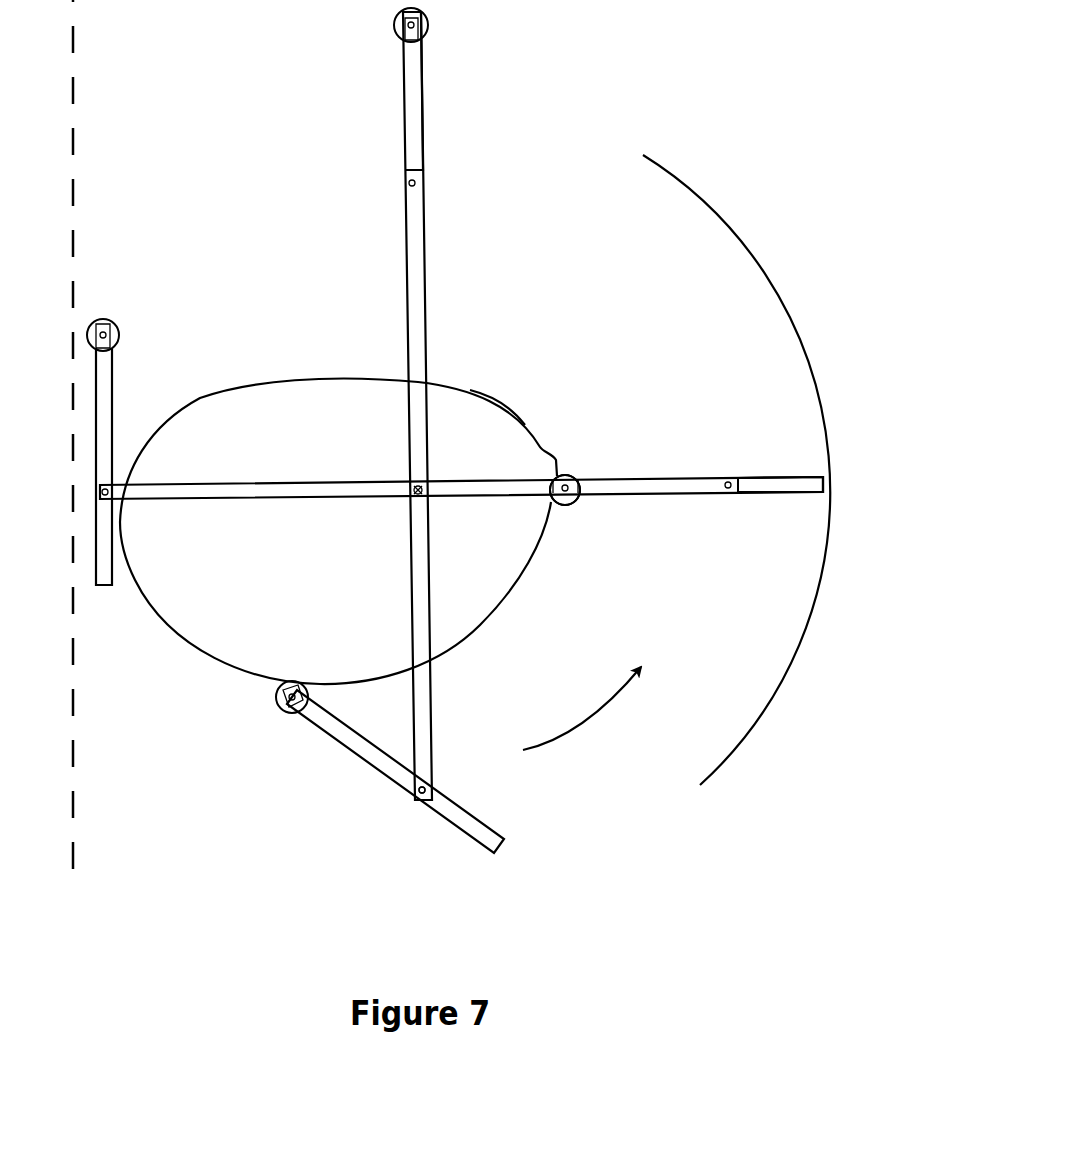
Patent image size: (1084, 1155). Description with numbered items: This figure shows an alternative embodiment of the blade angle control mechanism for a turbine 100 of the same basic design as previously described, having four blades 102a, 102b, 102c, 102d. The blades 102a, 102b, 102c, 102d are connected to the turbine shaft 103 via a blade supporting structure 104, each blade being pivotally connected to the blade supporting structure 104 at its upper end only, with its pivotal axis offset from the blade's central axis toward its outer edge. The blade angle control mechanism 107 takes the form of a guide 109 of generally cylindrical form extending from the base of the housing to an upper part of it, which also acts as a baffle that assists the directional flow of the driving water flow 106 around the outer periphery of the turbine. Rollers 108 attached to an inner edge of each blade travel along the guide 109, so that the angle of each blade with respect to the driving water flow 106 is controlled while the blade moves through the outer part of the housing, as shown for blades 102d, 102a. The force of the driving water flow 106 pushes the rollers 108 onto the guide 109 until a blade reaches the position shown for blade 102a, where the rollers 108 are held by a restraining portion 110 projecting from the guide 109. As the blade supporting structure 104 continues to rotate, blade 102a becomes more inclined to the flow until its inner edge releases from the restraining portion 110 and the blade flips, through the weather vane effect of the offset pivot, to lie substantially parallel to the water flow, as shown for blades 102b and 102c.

The turbine 100 is at (752, 126).
The blade 102a is at (775, 483).
The blade 102b is at (413, 80).
The blade 102c is at (110, 592).
The blade 102d is at (470, 828).
The turbine shaft 103 is at (412, 487).
The blade supporting structure 104 is at (415, 320).
The driving water flow 106 is at (583, 722).
The blade angle control mechanism 107 is at (500, 575).
The rollers 108 is at (575, 503).
The guide 109 is at (495, 403).
The restraining portion 110 is at (553, 465).